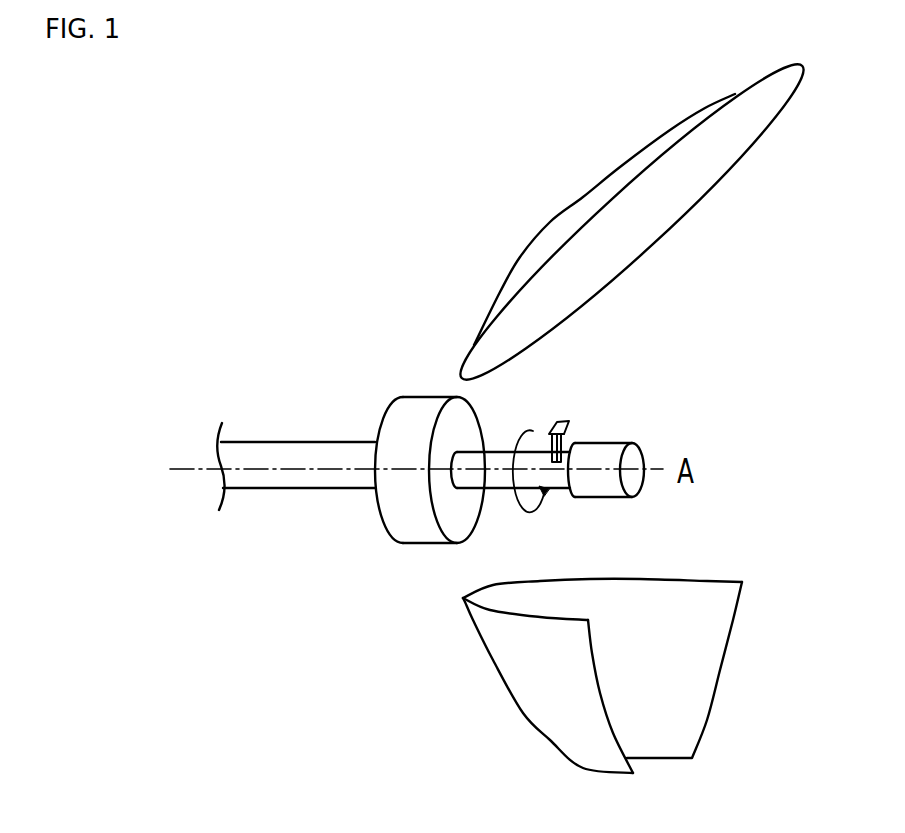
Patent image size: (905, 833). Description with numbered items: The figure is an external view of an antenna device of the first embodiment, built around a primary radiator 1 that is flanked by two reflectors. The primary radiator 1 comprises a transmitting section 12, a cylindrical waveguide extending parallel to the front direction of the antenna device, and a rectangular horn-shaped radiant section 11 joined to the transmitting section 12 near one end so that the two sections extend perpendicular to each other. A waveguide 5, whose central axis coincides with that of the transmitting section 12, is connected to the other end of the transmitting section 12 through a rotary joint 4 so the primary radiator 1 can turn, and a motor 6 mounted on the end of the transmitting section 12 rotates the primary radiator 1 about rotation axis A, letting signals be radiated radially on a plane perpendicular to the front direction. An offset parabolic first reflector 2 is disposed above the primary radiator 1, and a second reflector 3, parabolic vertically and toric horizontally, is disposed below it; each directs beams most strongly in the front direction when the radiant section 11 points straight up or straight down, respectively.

The primary radiator 1 is at (630, 391).
The first reflector 2 is at (783, 80).
The second reflector 3 is at (725, 590).
The rotary joint 4 is at (410, 538).
The waveguide 5 is at (306, 477).
The motor 6 is at (608, 490).
The radiant section 11 is at (568, 453).
The transmitting section 12 is at (495, 453).